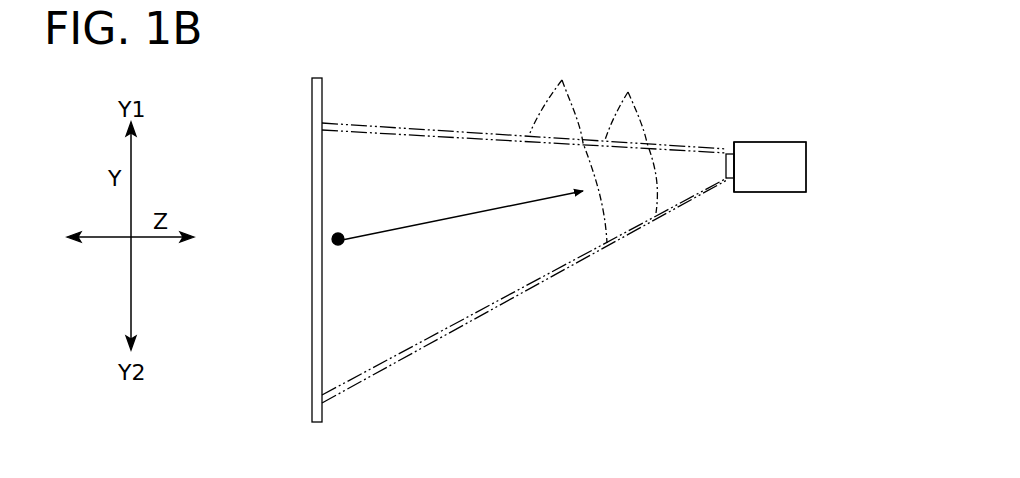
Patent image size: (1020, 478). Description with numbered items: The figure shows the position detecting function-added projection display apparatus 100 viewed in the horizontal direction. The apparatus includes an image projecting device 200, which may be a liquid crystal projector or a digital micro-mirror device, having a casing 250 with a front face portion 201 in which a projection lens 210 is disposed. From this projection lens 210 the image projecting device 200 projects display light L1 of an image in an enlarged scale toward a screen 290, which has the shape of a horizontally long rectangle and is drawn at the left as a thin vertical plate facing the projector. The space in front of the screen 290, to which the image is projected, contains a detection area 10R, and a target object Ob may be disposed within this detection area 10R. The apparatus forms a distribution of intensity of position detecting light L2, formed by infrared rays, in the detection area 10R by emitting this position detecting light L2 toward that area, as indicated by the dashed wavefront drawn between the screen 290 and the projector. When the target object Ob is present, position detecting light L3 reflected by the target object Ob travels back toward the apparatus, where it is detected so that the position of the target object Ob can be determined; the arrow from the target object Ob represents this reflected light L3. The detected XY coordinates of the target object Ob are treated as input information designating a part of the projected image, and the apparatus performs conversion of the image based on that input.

The screen 290 is at (322, 308).
The detection area 10R is at (379, 186).
The position detecting light L2 is at (568, 148).
The display light L1 is at (631, 140).
The position detecting light reflected by the target object L3 is at (462, 215).
The target object Ob is at (344, 243).
The image projecting device 200 is at (760, 180).
The position detecting function-added projection display apparatus 100 is at (745, 207).
The casing 250 is at (782, 143).
The projection lens 210 is at (726, 167).
The front face portion 201 is at (733, 148).